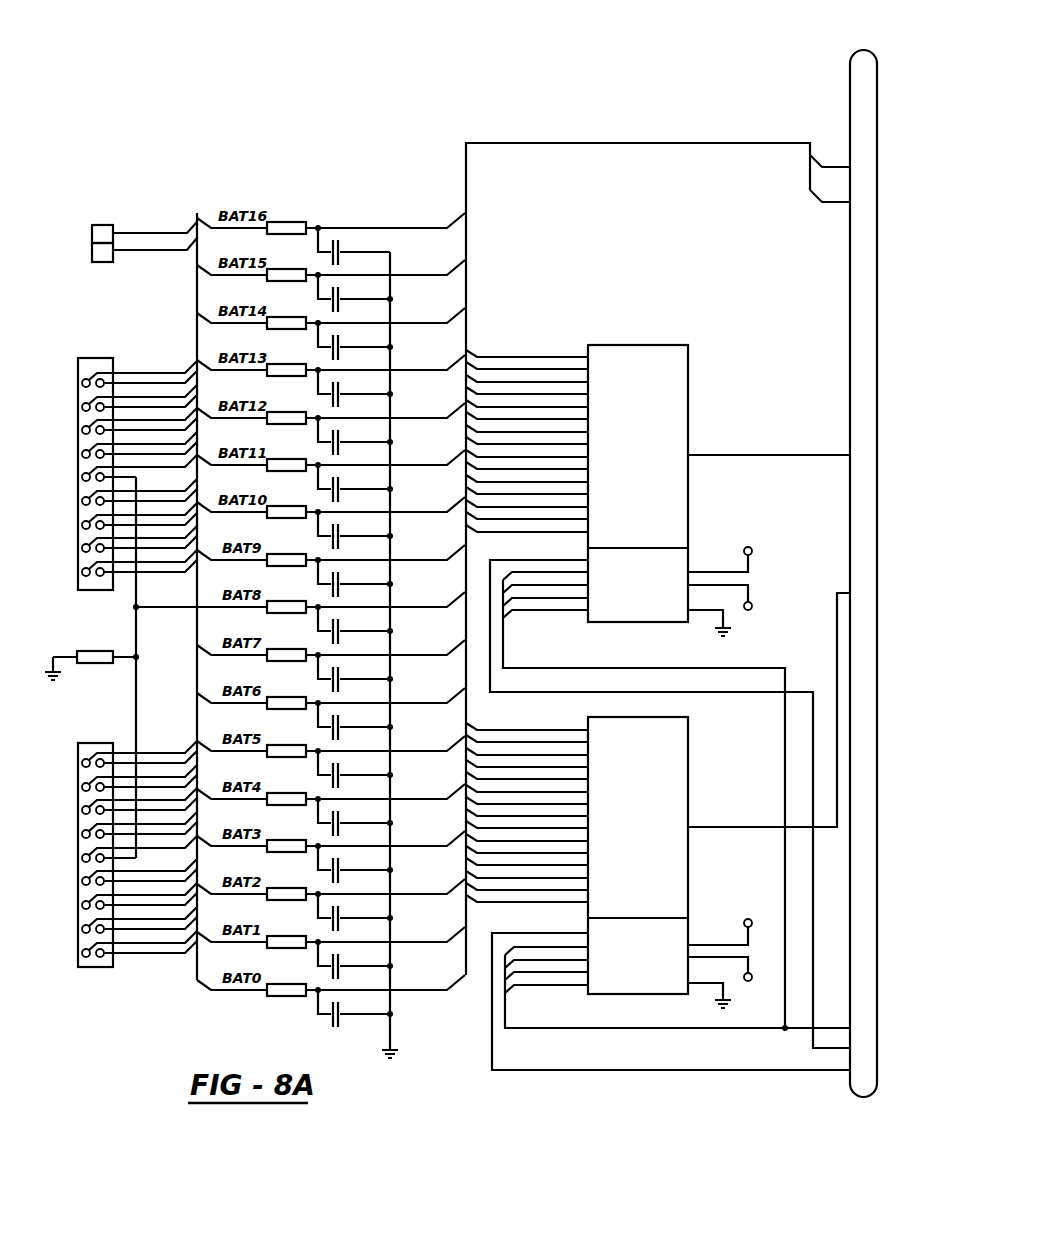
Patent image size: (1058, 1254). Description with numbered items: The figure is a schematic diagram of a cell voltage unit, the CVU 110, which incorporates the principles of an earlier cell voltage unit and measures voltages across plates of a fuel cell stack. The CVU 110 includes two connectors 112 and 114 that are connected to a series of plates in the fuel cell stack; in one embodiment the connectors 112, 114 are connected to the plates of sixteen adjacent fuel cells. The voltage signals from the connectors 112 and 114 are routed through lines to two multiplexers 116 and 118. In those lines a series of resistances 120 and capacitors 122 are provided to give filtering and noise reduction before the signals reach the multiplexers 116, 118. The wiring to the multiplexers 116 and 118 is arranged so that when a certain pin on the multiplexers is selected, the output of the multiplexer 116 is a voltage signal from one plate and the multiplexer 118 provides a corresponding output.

The CVU 110 is at (576, 77).
The connector 112 is at (78, 373).
The connector 114 is at (77, 945).
The multiplexer 116 is at (688, 375).
The multiplexer 118 is at (688, 770).
The resistance 120 is at (292, 222).
The capacitor 122 is at (337, 243).